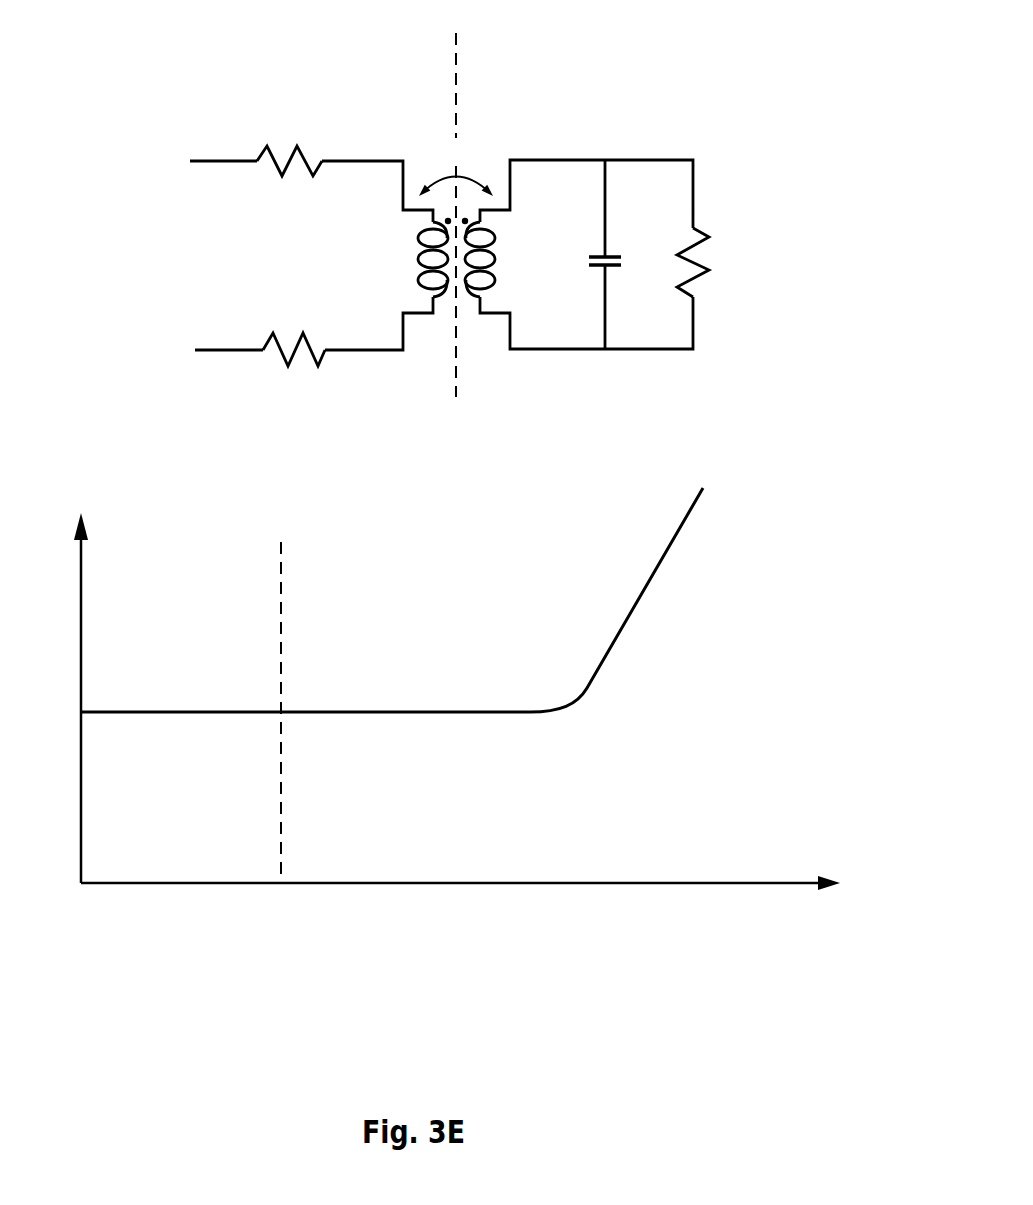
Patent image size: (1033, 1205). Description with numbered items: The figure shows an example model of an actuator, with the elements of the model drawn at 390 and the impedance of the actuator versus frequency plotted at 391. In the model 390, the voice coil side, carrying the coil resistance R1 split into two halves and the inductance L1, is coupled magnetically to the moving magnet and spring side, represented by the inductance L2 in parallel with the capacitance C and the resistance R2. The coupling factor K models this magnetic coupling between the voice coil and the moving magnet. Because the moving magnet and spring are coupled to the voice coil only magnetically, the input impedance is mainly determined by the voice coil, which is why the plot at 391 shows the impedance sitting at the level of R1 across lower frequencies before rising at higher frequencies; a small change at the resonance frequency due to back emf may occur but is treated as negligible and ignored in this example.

The model 390 is at (212, 57).
The impedance of the actuator versus frequency 391 is at (212, 530).
The voice coil resistance (two halves R1/2) R1 is at (291, 256).
The voice coil inductance (primary winding) L1 is at (410, 259).
The moving magnet side inductance (secondary winding) L2 is at (496, 259).
The spring compliance capacitance C is at (590, 254).
The mechanical damping resistance R2 is at (677, 262).
The coupling factor K is at (456, 165).